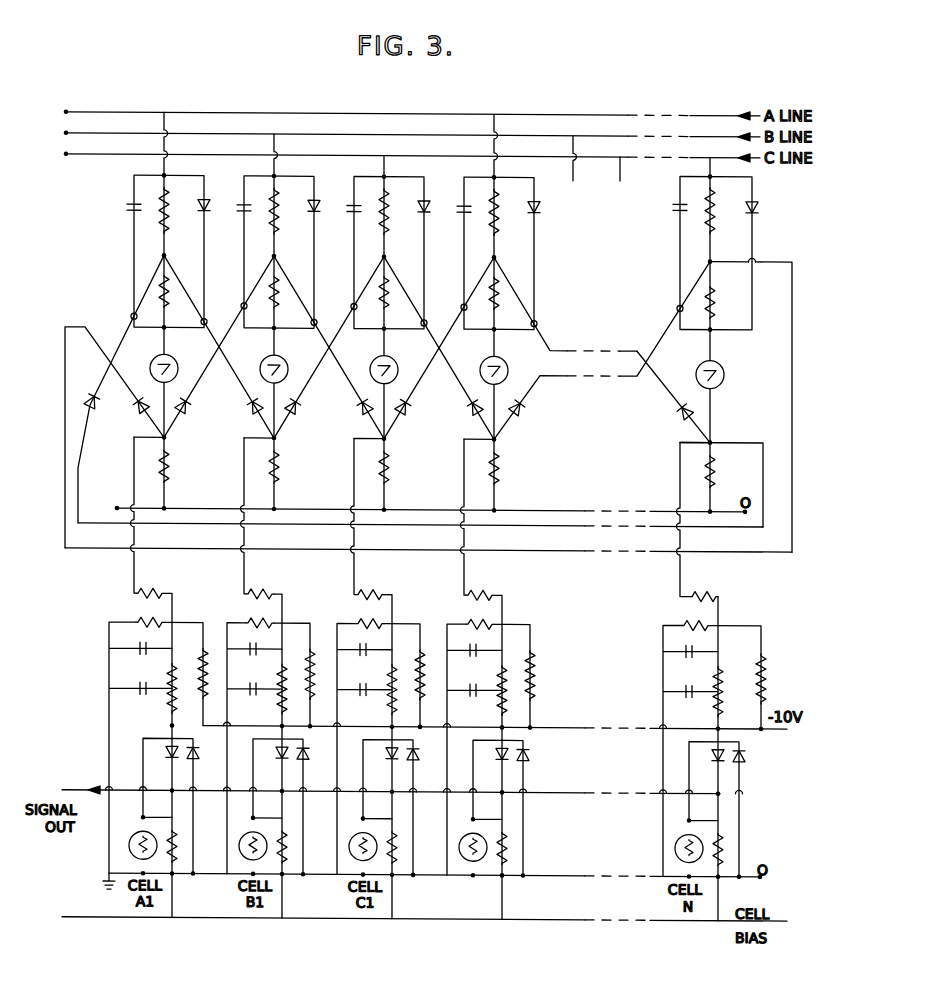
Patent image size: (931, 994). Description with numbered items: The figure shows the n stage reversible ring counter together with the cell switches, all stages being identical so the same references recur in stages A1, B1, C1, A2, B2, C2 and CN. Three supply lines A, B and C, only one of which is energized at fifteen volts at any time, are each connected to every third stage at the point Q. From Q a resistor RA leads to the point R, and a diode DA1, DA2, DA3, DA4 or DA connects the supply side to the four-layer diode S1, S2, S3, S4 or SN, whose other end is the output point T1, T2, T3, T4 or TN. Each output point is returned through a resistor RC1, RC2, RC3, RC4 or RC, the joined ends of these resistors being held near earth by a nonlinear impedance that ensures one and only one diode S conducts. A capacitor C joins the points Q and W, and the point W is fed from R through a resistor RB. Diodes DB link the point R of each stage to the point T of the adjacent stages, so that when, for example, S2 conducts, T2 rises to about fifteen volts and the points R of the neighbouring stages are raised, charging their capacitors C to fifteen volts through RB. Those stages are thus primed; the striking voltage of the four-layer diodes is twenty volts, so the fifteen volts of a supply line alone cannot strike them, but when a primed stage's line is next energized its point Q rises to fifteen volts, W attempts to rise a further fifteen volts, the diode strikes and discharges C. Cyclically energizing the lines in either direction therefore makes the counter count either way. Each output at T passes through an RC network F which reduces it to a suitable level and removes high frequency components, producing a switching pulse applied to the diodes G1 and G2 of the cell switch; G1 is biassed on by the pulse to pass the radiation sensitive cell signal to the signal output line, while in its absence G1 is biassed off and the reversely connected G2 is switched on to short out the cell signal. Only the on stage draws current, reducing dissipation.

The stage A1 is at (164, 132).
The stage B1 is at (274, 133).
The stage C1 is at (384, 134).
The stage A2 is at (494, 134).
The stage B2 is at (573, 137).
The stage C2 is at (631, 137).
The stage CN is at (708, 135).
The point Q is at (443, 169).
The capacitor C is at (399, 199).
The resistor RA is at (448, 210).
The diode DA1 is at (218, 219).
The diode DA2 is at (328, 219).
The diode DA3 is at (438, 220).
The diode DA4 is at (548, 221).
The diode DA is at (767, 212).
The point R is at (445, 250).
The resistor RB is at (449, 297).
The point W is at (440, 359).
The four-layer diode S1 is at (176, 389).
The four-layer diode S2 is at (274, 346).
The four-layer diode S3 is at (384, 347).
The four-layer diode S4 is at (547, 349).
The four-layer diode Sn SN is at (690, 397).
The diode DB is at (388, 417).
The point T1 is at (161, 448).
The point T2 is at (271, 449).
The point T3 is at (381, 450).
The point T4 is at (491, 450).
The point Tn TN is at (709, 432).
The resistor RC1 is at (178, 478).
The resistor RC2 is at (288, 479).
The resistor RC3 is at (398, 480).
The resistor RC4 is at (508, 480).
The resistor RC is at (721, 472).
The RC network F is at (393, 669).
The diode G1 is at (438, 764).
The diode G2 is at (475, 766).